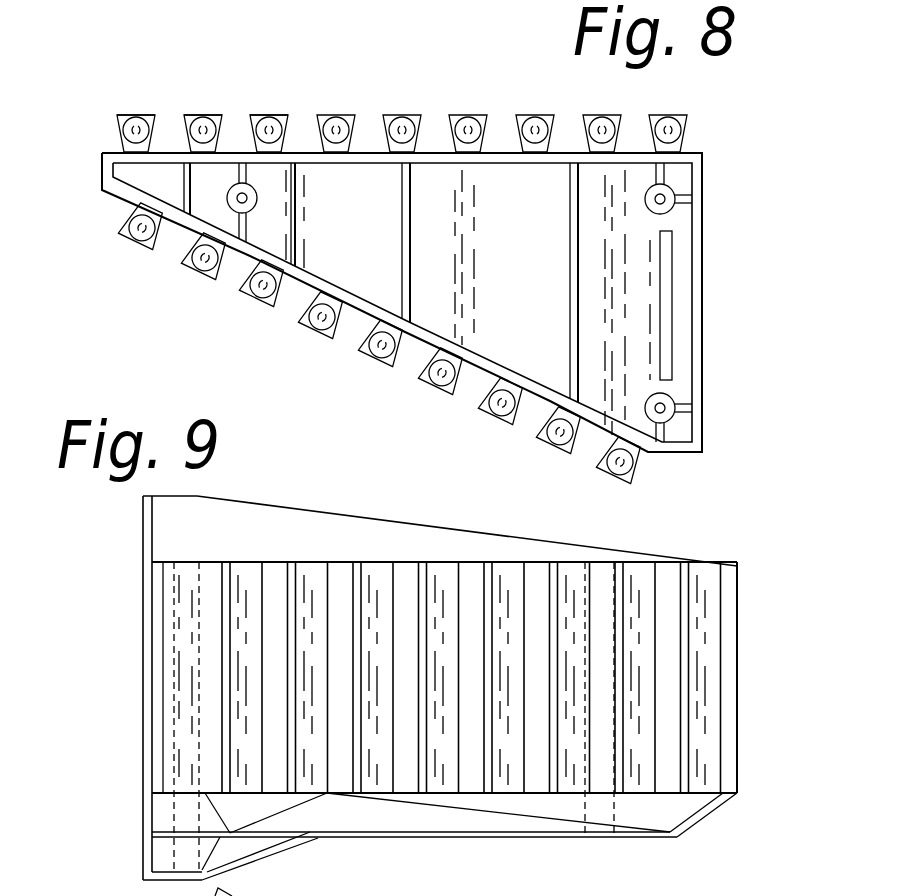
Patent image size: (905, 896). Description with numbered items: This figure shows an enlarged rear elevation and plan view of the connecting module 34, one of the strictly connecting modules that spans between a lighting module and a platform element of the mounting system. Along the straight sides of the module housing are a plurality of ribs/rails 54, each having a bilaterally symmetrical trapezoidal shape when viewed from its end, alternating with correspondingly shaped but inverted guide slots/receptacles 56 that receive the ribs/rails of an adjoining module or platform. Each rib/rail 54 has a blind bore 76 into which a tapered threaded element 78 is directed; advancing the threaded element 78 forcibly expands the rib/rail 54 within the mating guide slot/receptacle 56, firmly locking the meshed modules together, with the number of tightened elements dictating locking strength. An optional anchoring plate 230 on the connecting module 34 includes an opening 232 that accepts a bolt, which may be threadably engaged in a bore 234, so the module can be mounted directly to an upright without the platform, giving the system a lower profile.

In FIG. 8, the connecting module 34 is at (439, 295).
In FIG. 9, the connecting module 34 is at (404, 696).
In FIG. 8, the ribs/rails 54 is at (392, 240).
In FIG. 9, the ribs/rails 54 is at (446, 640).
In FIG. 8, the guide slots/receptacles 56 is at (402, 259).
In FIG. 8, the bore 76 is at (195, 60).
In FIG. 8, the threaded element 78 is at (202, 58).
In FIG. 8, the anchoring plate 230 is at (725, 234).
In FIG. 8, the opening 232 is at (474, 299).
In FIG. 8, the bore 234 is at (459, 302).